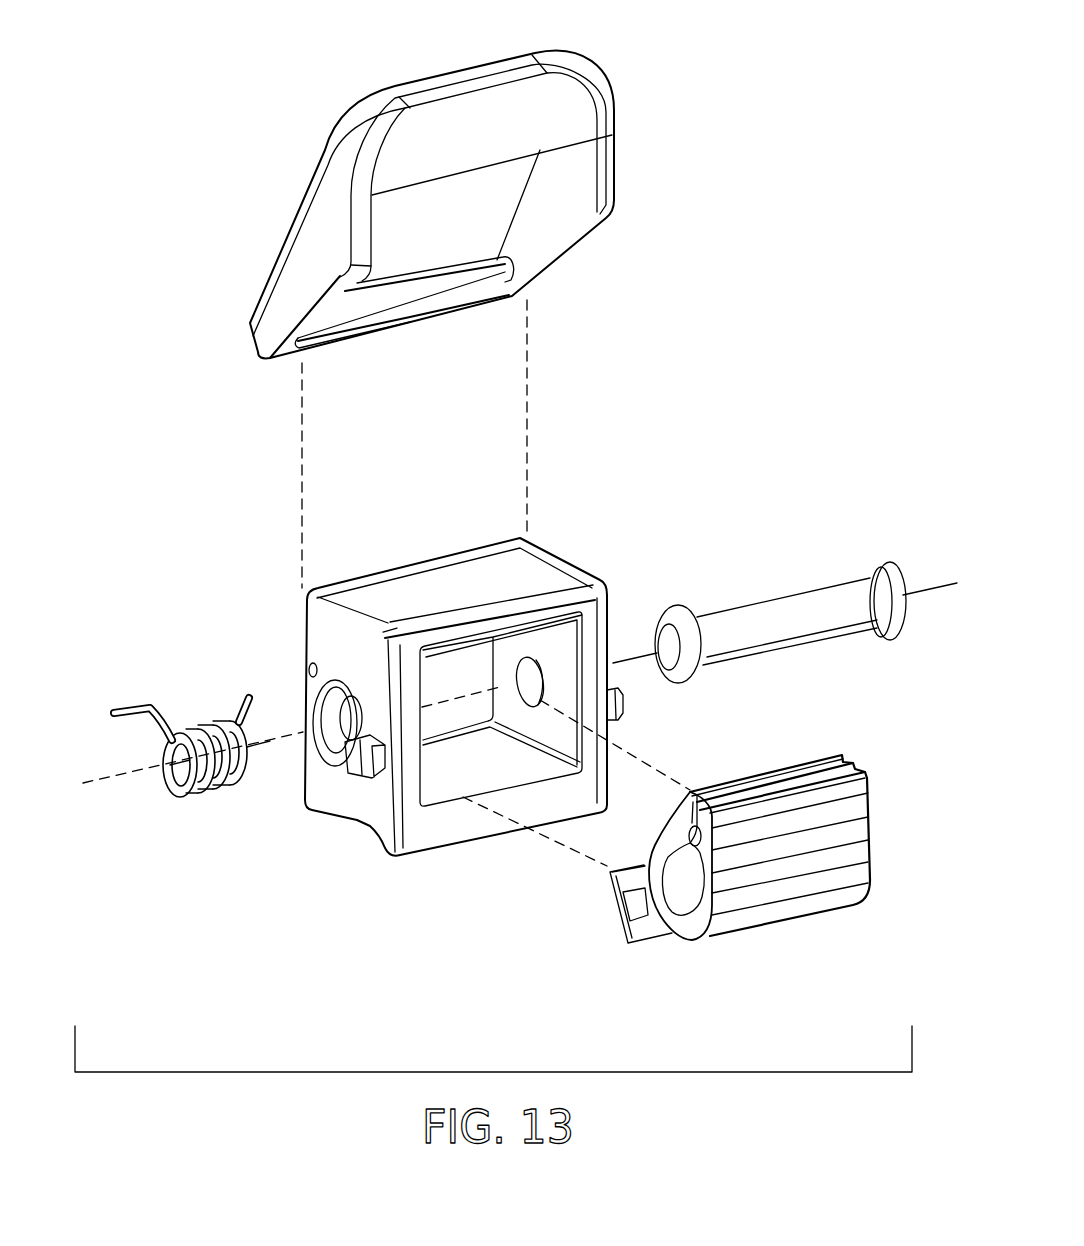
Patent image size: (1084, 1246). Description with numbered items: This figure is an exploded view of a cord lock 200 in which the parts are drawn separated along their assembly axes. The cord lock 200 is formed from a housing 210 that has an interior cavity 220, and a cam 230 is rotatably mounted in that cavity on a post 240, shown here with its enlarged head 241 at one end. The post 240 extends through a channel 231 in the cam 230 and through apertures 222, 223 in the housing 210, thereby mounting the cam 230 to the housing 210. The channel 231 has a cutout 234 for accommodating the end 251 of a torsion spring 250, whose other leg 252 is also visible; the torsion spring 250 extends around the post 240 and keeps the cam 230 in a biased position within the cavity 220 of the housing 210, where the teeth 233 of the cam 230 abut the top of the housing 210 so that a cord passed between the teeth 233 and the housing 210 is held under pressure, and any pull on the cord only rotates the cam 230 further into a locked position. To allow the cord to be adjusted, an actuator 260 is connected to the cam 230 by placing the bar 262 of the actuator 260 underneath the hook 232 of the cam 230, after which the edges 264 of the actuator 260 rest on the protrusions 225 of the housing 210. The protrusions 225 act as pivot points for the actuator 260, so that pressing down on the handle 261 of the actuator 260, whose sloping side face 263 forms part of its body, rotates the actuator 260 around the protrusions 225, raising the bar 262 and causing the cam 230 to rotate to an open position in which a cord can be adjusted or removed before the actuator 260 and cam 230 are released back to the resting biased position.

The cord lock 200 is at (172, 508).
The housing 210 is at (486, 695).
The interior cavity 220 is at (460, 773).
The aperture 222 is at (528, 672).
The aperture 223 is at (313, 740).
The protrusions 225 is at (343, 773).
The cam 230 is at (697, 851).
The channel 231 is at (682, 903).
The hook 232 is at (605, 896).
The teeth 233 is at (805, 778).
The cutout 234 is at (690, 793).
The post 240 is at (803, 590).
The pin head 241 is at (890, 570).
The torsion spring 250 is at (156, 748).
The end 251 is at (237, 720).
The spring leg 252 is at (152, 712).
The actuator 260 is at (623, 188).
The handle 261 is at (577, 100).
The bar 262 is at (460, 293).
The wedge face 263 is at (310, 217).
The edges 264 is at (313, 312).